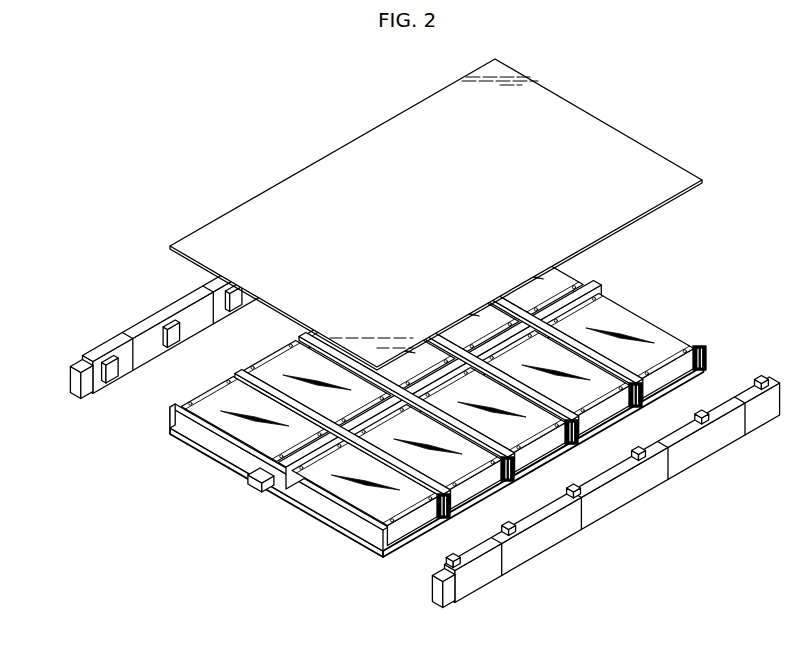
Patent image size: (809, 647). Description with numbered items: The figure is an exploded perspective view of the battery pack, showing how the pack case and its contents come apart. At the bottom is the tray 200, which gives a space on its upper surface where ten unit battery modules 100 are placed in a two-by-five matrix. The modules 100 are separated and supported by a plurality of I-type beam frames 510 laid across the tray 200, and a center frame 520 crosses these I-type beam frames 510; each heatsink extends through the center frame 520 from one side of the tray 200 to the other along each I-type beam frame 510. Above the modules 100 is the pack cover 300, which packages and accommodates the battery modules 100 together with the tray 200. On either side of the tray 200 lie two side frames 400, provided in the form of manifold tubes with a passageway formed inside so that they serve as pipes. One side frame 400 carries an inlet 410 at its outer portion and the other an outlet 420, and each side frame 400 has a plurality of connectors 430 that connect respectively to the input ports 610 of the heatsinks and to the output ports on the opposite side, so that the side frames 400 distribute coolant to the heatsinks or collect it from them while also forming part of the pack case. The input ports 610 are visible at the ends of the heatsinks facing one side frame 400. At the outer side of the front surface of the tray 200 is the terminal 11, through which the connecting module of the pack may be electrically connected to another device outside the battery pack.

The terminal 11 is at (262, 492).
The battery module 100 is at (663, 348).
The tray 200 is at (409, 537).
The pack cover 300 is at (611, 128).
The side frame 400 is at (147, 304).
The inlet 410 is at (436, 596).
The outlet 420 is at (73, 388).
The connector 430 is at (168, 356).
The I-type beam frame 510 is at (580, 350).
The center frame 520 is at (578, 299).
The input port 610 is at (628, 409).